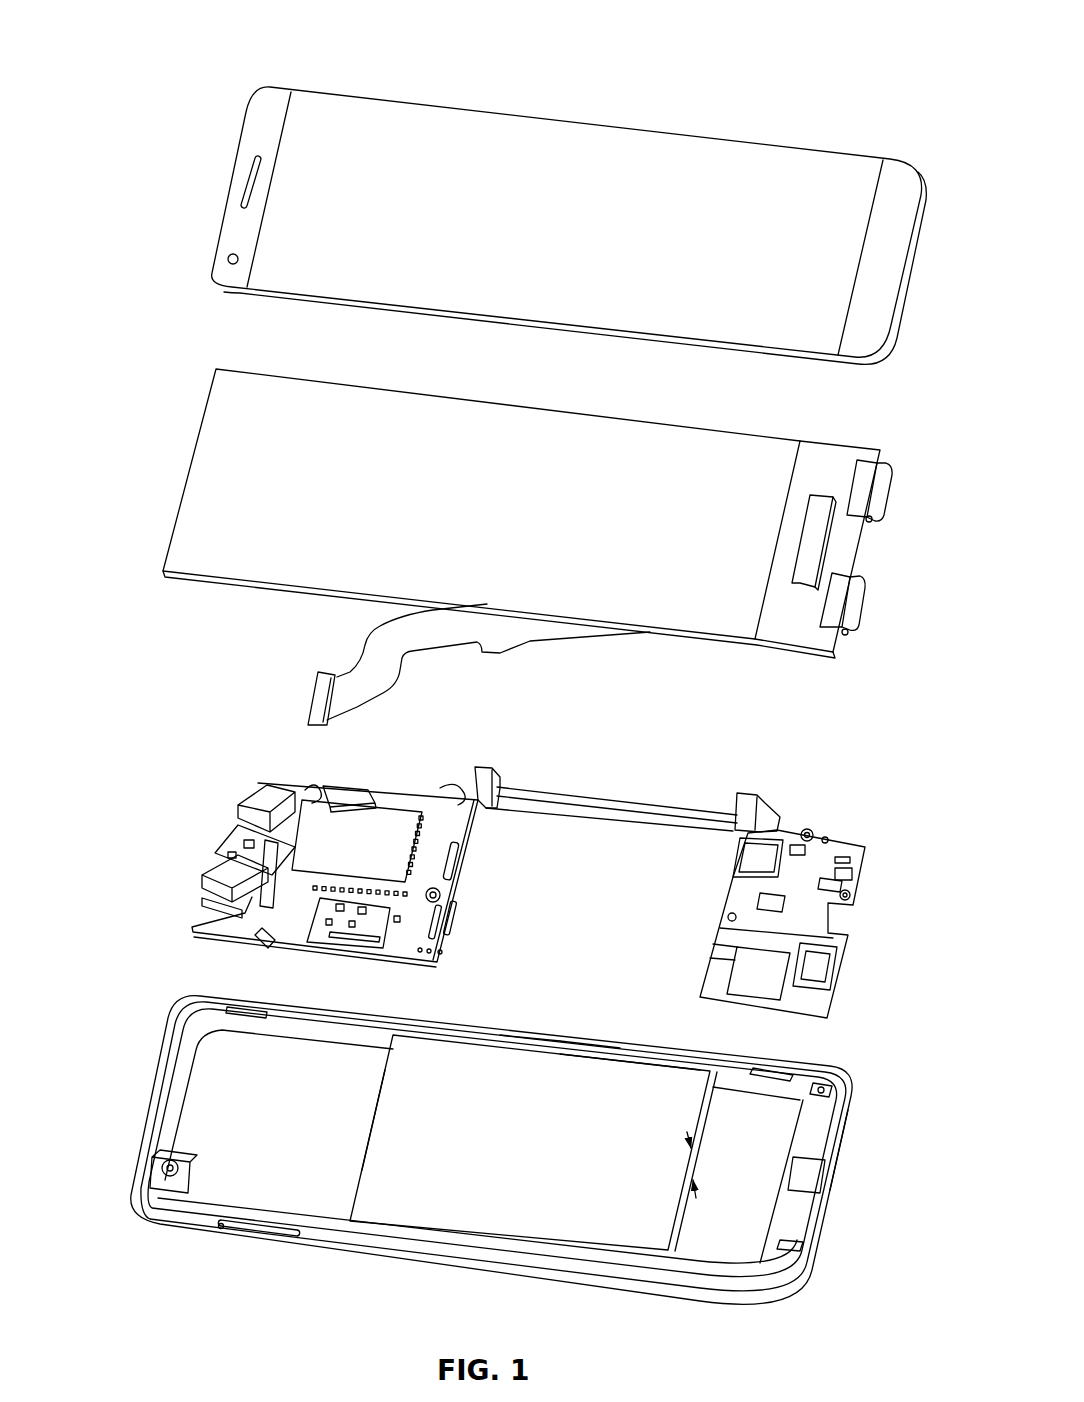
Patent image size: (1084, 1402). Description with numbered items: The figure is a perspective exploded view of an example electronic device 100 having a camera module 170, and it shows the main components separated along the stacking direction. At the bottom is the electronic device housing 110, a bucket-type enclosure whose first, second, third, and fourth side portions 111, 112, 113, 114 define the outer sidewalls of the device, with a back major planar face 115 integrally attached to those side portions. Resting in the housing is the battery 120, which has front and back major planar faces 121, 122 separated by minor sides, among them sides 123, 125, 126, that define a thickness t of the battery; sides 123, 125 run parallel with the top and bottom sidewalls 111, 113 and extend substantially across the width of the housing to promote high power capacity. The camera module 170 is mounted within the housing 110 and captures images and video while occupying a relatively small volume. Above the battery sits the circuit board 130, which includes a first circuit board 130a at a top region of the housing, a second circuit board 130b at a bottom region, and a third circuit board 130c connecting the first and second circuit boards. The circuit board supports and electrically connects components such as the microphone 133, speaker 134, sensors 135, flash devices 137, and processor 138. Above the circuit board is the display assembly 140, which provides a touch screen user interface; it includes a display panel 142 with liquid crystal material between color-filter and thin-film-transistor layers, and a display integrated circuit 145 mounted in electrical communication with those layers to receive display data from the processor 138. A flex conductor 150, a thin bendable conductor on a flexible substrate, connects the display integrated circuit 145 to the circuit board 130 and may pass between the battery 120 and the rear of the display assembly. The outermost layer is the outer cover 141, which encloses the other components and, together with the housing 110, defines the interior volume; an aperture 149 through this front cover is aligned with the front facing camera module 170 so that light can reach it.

The electronic device 100 is at (278, 40).
The electronic device housing 110 is at (850, 1068).
The first side portion 111 is at (150, 1098).
The second side portion 112 is at (466, 1270).
The third side portion 113 is at (843, 1152).
The fourth side portion 114 is at (587, 1036).
The back major planar face 115 is at (236, 1068).
The battery 120 is at (436, 1072).
The front major planar face 121 is at (621, 1110).
The back major planar face 122 is at (702, 1128).
The minor side 123 is at (373, 1112).
The minor side 125 is at (703, 1146).
The minor side 126 is at (534, 1036).
The circuit board 130 is at (492, 770).
The first circuit board 130a is at (276, 782).
The second circuit board 130b is at (822, 832).
The third circuit board 130c is at (700, 803).
The microphone 133 is at (853, 884).
The speaker 134 is at (230, 835).
The sensors 135 is at (200, 878).
The flash devices 137 is at (238, 808).
The processor 138 is at (388, 805).
The display assembly 140 is at (213, 366).
The outer cover 141 is at (858, 152).
The display panel 142 is at (583, 432).
The display integrated circuit 145 is at (822, 507).
The aperture 149 is at (227, 255).
The flex conductor 150 is at (338, 670).
The camera module 170 is at (150, 1160).
The thickness t is at (696, 1163).